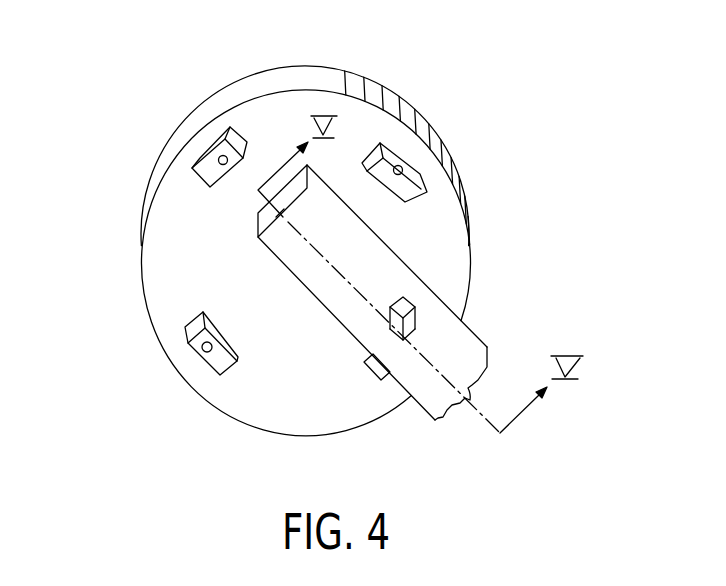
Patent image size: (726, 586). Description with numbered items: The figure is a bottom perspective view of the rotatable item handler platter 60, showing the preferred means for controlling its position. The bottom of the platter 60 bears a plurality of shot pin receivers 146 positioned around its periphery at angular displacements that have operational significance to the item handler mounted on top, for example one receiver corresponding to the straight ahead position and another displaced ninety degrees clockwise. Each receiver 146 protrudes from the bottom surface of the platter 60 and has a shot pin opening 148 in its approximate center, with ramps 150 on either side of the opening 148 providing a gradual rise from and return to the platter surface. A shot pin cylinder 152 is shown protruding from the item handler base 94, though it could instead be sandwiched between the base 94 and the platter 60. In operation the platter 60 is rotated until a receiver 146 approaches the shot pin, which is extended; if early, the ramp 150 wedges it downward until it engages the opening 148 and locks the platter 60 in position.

The platter 60 is at (160, 268).
The item handler base 94 is at (449, 366).
The shot pin receiver 146 is at (240, 172).
The shot pin opening 148 is at (400, 171).
The ramp 150 is at (383, 148).
The shot pin cylinder 152 is at (401, 341).